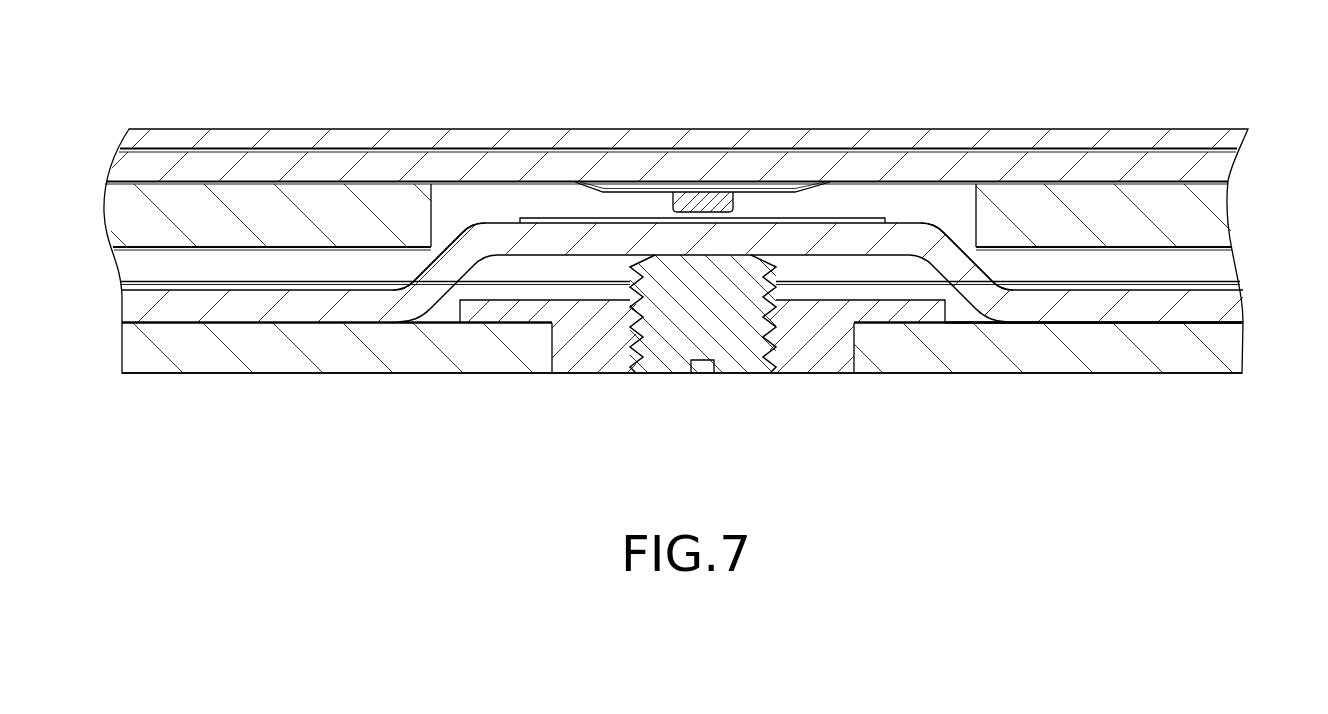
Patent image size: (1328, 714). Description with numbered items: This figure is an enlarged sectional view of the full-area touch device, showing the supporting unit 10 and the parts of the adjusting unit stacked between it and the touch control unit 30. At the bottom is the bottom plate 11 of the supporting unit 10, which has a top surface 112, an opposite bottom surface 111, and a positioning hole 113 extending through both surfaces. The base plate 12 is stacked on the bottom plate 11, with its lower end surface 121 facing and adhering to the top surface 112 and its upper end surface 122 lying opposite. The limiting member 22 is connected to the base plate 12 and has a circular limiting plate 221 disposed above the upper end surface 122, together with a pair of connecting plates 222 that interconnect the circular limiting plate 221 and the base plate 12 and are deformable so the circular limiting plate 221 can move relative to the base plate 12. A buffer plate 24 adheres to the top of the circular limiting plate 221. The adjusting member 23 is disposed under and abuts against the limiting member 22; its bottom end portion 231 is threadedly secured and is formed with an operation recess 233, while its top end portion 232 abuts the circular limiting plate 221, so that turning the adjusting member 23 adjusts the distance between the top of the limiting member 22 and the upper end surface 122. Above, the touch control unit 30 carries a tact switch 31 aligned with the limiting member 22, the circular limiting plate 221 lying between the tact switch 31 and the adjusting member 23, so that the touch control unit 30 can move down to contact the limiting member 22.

The supporting unit 10 is at (185, 380).
The bottom plate 11 is at (664, 281).
The bottom surface 111 is at (1075, 373).
The top surface 112 is at (1170, 325).
The positioning hole 113 is at (857, 352).
The base plate 12 is at (664, 214).
The lower end surface 121 is at (1128, 320).
The upper end surface 122 is at (1082, 285).
The limiting member 22 is at (664, 214).
The circular limiting plate 221 is at (668, 243).
The connecting plates 222 is at (420, 277).
The adjusting member 23 is at (668, 310).
The bottom end portion 231 is at (744, 364).
The top end portion 232 is at (702, 257).
The operation recess 233 is at (699, 378).
The buffer plate 24 is at (530, 220).
The touch control unit 30 is at (876, 122).
The tact switch 31 is at (705, 205).